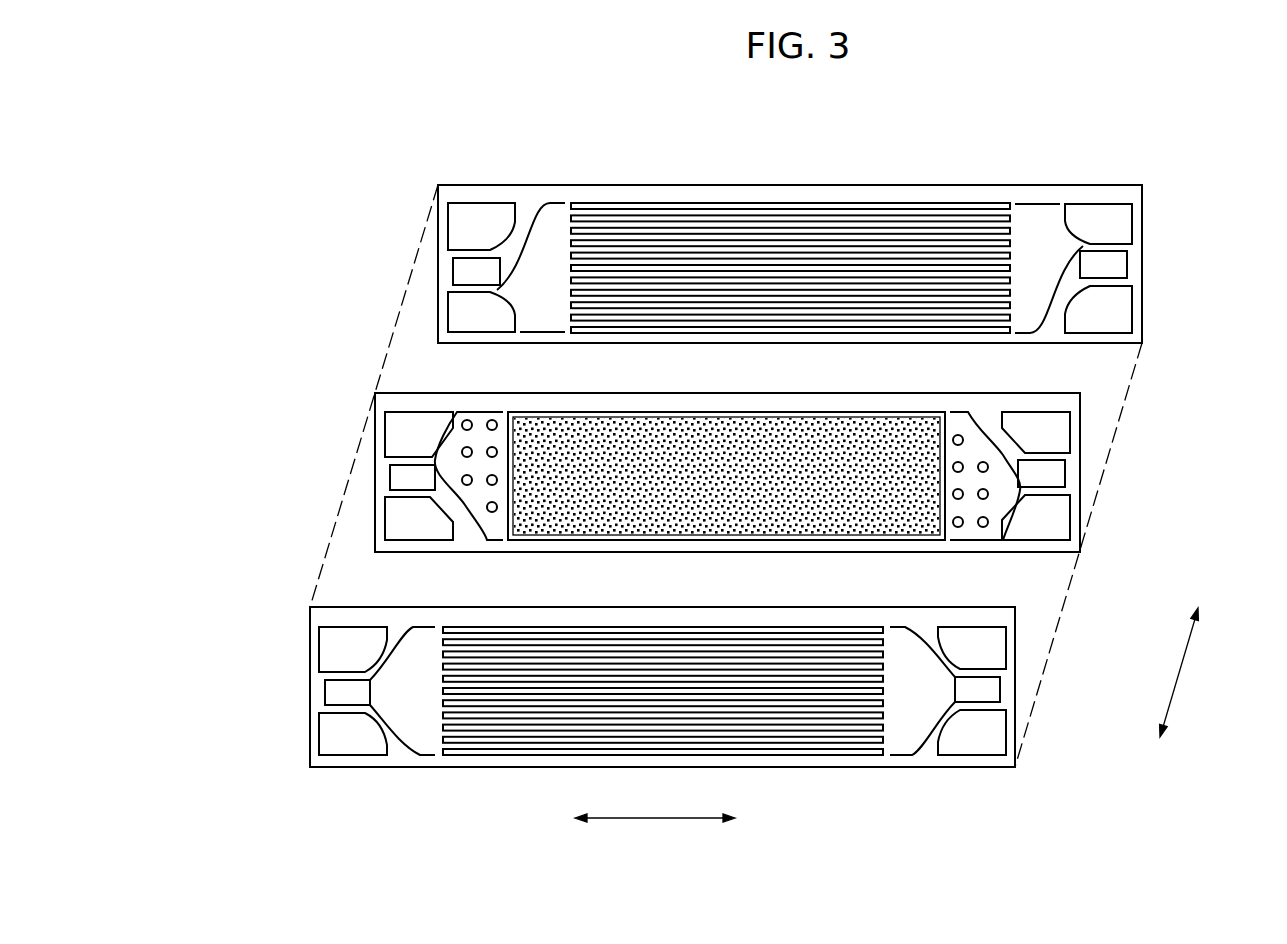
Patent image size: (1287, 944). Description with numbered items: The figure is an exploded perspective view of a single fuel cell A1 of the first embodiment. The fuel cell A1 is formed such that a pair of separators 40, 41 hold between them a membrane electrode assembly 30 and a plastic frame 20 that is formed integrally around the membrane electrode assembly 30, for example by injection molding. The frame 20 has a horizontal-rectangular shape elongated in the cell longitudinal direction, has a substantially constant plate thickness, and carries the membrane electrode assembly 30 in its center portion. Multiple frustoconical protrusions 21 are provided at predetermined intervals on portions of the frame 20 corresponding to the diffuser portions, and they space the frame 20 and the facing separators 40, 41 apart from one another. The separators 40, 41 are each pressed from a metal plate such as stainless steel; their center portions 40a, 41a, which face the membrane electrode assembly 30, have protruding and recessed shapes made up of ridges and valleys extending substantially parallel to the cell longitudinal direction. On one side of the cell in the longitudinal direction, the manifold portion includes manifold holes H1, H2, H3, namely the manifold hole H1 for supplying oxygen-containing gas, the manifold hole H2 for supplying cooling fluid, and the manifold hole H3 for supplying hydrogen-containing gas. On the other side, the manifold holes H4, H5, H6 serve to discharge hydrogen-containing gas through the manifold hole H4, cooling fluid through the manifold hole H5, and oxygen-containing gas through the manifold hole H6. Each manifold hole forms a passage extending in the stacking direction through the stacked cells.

The separator 40 is at (790, 223).
The center portion of separator 40a is at (765, 235).
The frame 20 is at (727, 478).
The membrane electrode assembly 30 is at (767, 400).
The frustoconical protrusions 21 is at (483, 487).
The separator 41 is at (662, 715).
The center portion of separator 41a is at (688, 645).
The fuel cell A1 is at (1031, 791).
The manifold hole H1 is at (455, 230).
The manifold hole H2 is at (463, 273).
The manifold hole H3 is at (455, 312).
The manifold hole H4 is at (1118, 229).
The manifold hole H5 is at (1118, 270).
The manifold hole H6 is at (1118, 312).